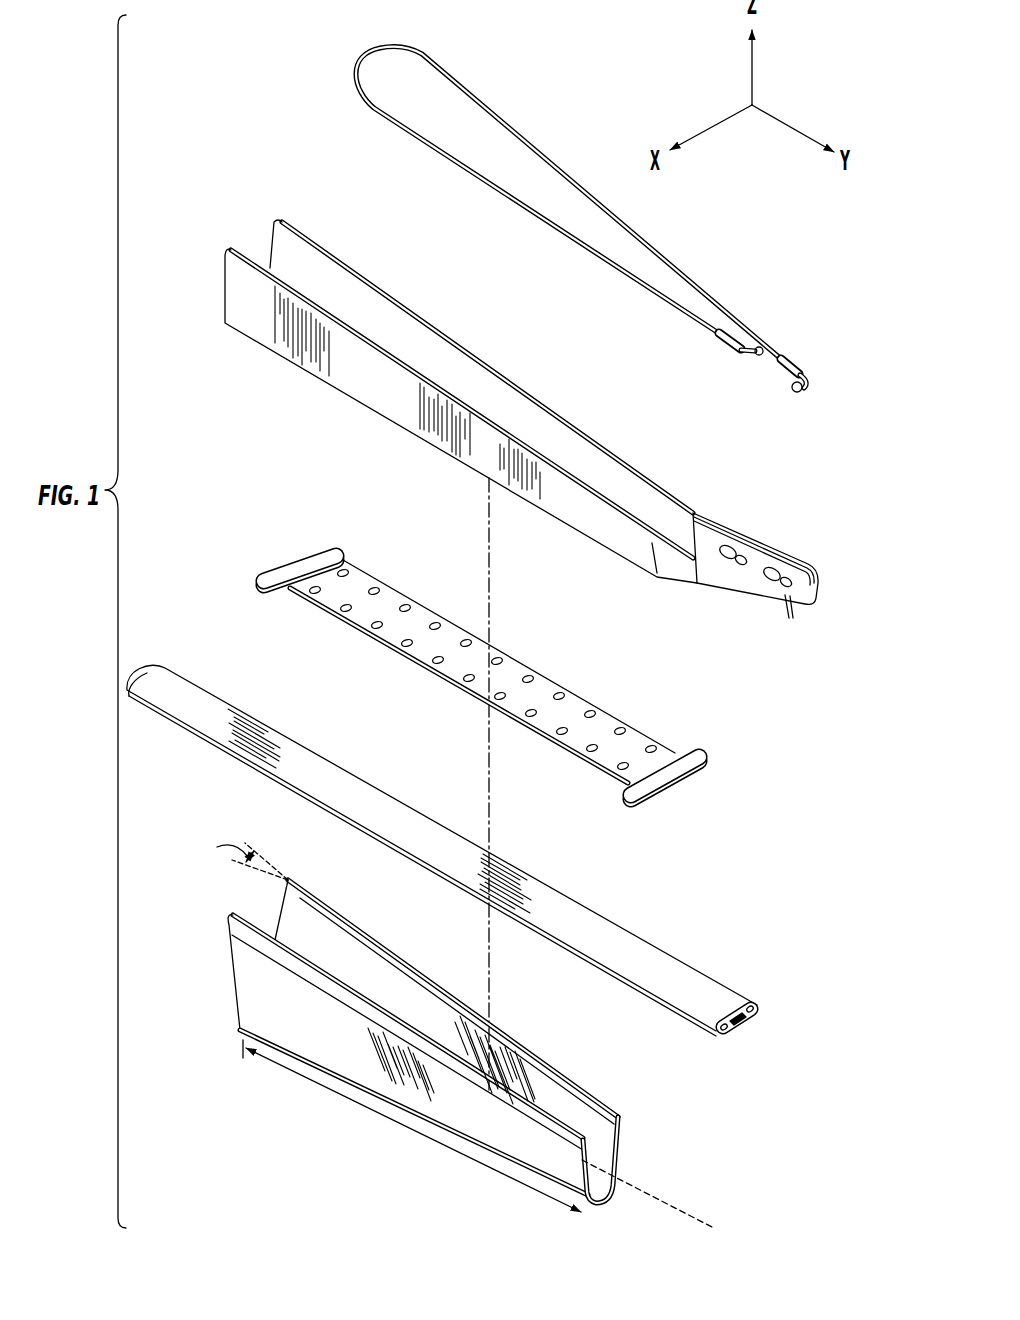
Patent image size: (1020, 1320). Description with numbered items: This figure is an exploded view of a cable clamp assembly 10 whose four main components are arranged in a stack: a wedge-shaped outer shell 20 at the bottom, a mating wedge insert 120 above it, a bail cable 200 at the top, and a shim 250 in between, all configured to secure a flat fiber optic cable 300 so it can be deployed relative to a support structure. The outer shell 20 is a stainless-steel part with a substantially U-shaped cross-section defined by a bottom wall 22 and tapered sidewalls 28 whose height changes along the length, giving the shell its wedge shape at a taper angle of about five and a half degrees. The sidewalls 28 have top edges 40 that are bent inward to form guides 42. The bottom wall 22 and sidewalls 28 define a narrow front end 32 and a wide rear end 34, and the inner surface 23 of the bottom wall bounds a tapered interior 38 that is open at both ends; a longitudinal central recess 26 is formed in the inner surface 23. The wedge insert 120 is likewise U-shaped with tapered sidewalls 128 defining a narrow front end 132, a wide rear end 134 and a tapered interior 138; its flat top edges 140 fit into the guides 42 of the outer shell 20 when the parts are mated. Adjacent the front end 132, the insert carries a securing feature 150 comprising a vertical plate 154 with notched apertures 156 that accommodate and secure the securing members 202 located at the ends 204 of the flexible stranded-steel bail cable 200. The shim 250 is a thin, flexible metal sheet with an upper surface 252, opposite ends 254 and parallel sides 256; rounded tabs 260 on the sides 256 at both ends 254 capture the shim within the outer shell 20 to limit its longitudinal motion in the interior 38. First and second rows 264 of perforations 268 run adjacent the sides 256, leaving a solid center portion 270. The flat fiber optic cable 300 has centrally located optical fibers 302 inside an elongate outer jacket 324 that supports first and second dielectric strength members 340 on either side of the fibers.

The cable clamp assembly 10 is at (616, 63).
The wedge-shaped outer shell 20 is at (328, 1162).
The bottom wall 22 is at (591, 1207).
The inner surface 23 is at (603, 1188).
The central recess 26 is at (608, 1193).
The sidewalls 28 is at (266, 1058).
The narrow front end 32 is at (621, 1141).
The wide rear end 34 is at (230, 980).
The tapered interior 38 is at (438, 1031).
The top edges 40 is at (287, 883).
The guides 42 is at (621, 1127).
The wedge insert 120 is at (301, 212).
The sidewalls 128 is at (357, 313).
The narrow front end 132 is at (700, 497).
The wide rear end 134 is at (268, 240).
The tapered interior 138 is at (477, 383).
The flat top edges 140 is at (583, 489).
The securing feature 150 is at (825, 562).
The plate 154 is at (818, 584).
The notched apertures 156 is at (732, 546).
The bail cable 200 is at (380, 51).
The securing members 202 is at (779, 371).
The ends 204 is at (787, 357).
The shim 250 is at (719, 777).
The upper surface 252 is at (600, 732).
The ends 254 is at (303, 586).
The sides 256 is at (432, 673).
The rounded tabs 260 is at (337, 543).
The rows of perforations 264 is at (330, 570).
The perforations 268 is at (557, 693).
The center portion 270 is at (418, 623).
The flat fiber optic cable 300 is at (740, 976).
The optical fibers 302 is at (752, 1004).
The outer jacket 324 is at (672, 968).
The dielectric strength members 340 is at (727, 1035).